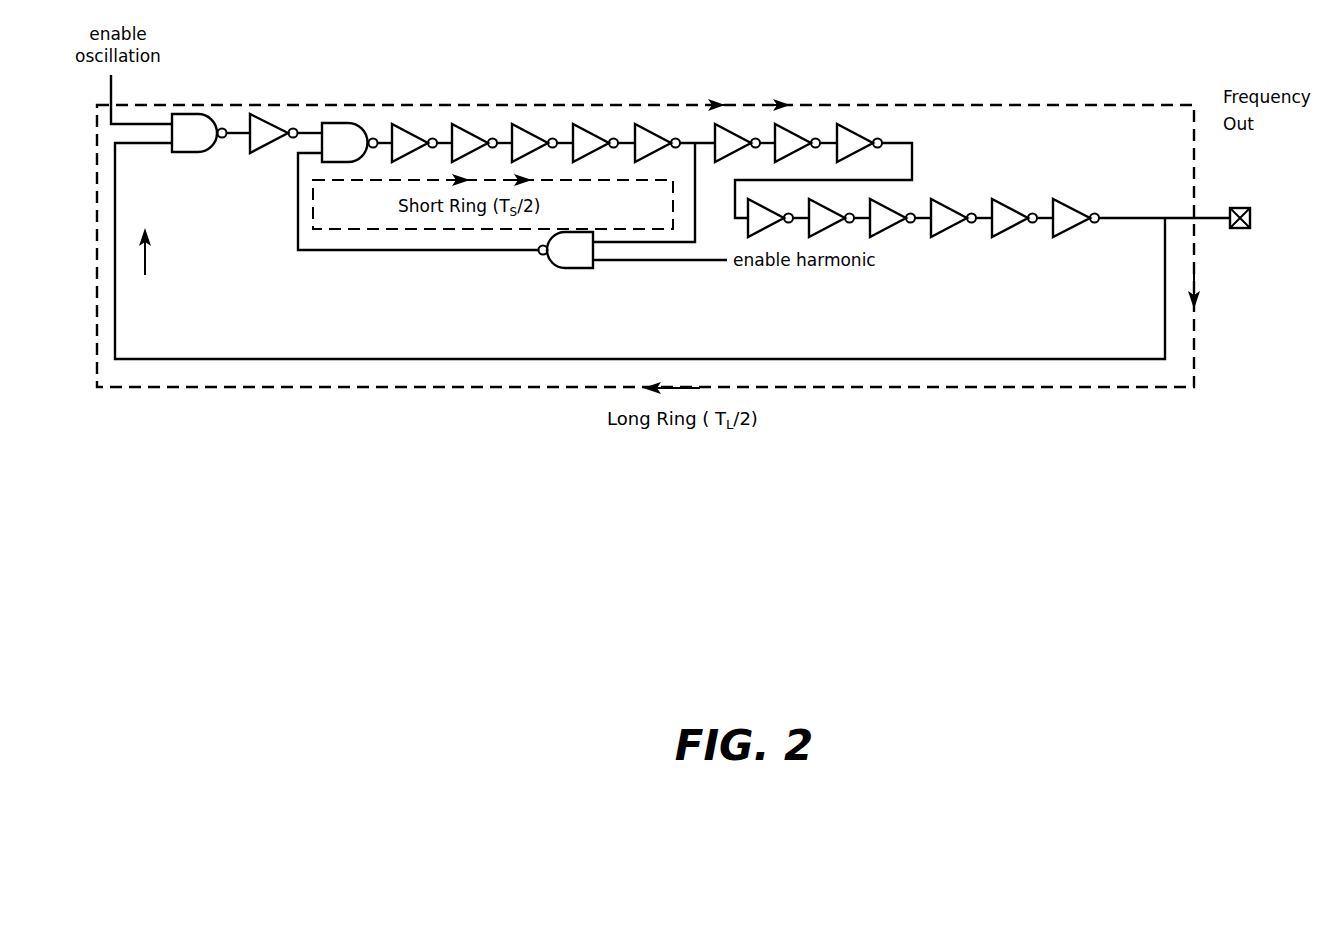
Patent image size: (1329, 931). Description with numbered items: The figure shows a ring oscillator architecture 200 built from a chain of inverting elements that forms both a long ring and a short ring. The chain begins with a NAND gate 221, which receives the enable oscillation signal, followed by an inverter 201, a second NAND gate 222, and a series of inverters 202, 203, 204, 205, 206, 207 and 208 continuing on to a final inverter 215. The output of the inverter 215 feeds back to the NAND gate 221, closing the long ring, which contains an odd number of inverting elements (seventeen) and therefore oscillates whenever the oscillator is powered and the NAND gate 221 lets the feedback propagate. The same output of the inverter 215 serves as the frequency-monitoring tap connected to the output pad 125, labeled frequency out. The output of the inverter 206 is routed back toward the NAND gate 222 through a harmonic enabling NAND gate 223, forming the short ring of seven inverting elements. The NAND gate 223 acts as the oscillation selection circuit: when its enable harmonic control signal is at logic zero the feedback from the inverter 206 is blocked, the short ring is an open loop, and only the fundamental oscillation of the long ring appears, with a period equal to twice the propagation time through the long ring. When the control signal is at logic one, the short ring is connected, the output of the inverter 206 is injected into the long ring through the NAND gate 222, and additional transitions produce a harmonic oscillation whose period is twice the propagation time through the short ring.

The output pad 125 is at (1238, 208).
The ring oscillator architecture 200 is at (1062, 257).
The inverter 201 is at (252, 154).
The inverter 202 is at (411, 129).
The inverter 203 is at (468, 130).
The inverter 204 is at (531, 129).
The inverter 205 is at (590, 129).
The inverter 206 is at (653, 129).
The inverter 207 is at (735, 132).
The inverter 208 is at (795, 132).
The inverter 215 is at (1073, 205).
The NAND gate 221 is at (177, 153).
The NAND gate 222 is at (340, 123).
The harmonic enabling NAND gate 223 is at (558, 270).